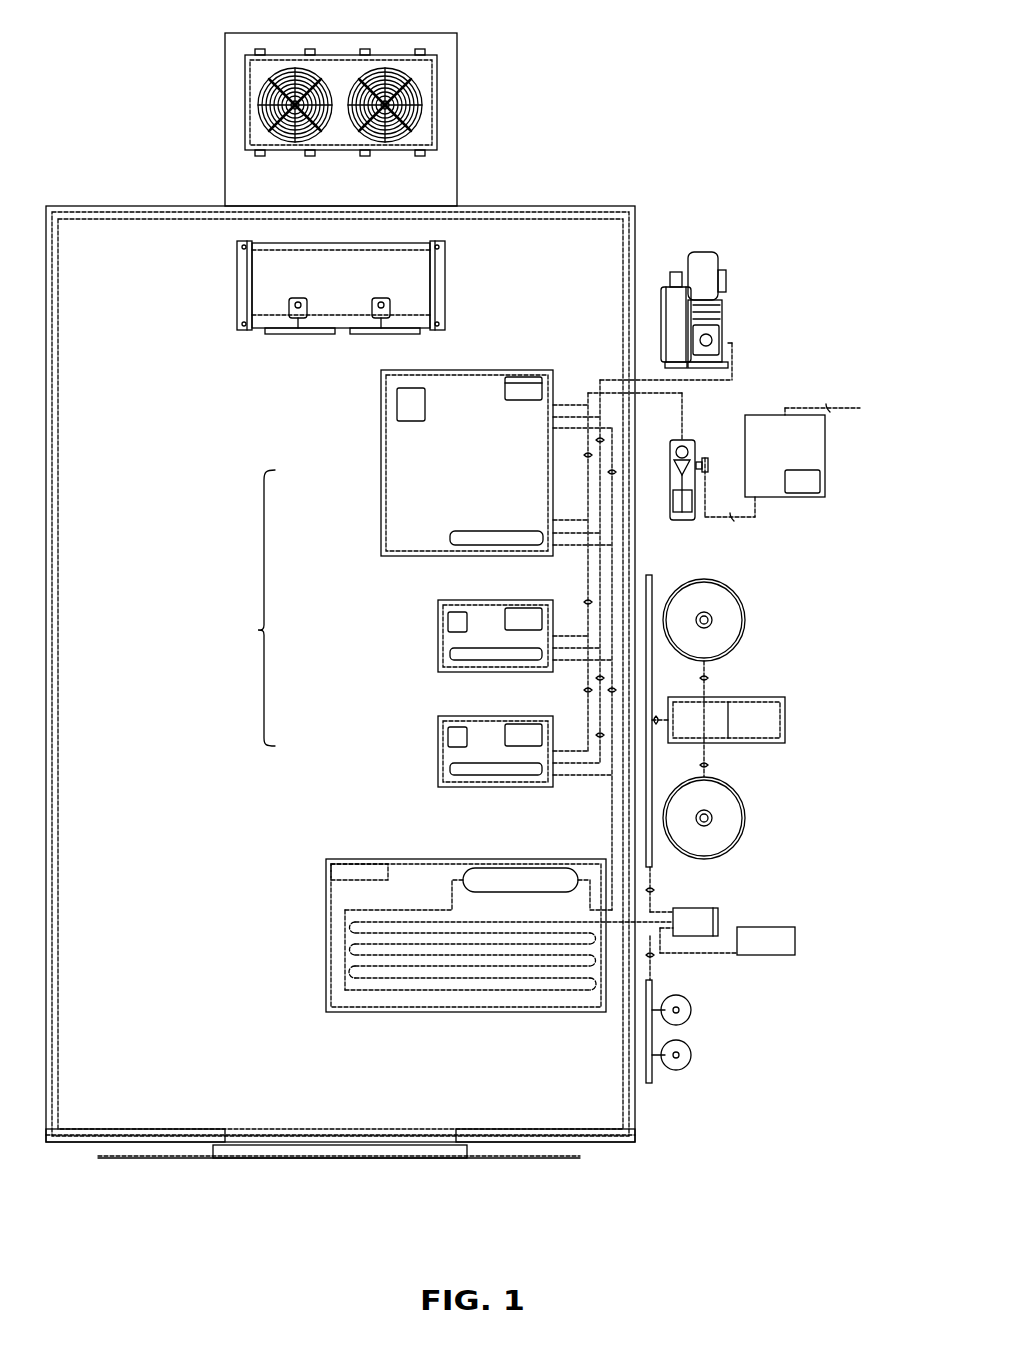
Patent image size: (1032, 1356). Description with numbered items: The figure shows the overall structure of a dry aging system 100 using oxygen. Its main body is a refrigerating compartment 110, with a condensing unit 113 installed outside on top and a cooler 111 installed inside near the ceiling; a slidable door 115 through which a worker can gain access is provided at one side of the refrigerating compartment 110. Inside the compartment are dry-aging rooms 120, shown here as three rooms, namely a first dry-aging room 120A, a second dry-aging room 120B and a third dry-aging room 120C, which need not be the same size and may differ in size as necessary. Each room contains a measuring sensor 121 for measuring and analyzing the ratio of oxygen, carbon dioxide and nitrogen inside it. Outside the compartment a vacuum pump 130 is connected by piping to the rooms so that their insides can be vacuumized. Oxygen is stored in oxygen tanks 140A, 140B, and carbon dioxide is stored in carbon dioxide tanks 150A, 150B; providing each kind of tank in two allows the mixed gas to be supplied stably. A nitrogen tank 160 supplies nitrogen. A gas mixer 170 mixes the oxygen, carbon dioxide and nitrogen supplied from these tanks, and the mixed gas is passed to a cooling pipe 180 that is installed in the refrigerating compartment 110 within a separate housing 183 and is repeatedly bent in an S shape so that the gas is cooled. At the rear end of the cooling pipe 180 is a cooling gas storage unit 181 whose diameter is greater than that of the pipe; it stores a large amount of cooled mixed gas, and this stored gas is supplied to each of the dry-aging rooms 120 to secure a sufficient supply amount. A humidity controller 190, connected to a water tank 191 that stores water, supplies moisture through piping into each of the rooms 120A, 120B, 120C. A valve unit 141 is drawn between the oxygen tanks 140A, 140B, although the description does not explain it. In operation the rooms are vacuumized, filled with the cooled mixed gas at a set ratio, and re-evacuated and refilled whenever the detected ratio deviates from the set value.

The dry aging system 100 is at (801, 28).
The refrigerating compartment 110 is at (590, 206).
The cooler 111 is at (237, 262).
The condensing unit 113 is at (457, 58).
The slidable door 115 is at (242, 1160).
The dry-aging rooms 120 is at (412, 578).
The first dry-aging room 120A is at (381, 482).
The second dry-aging room 120B is at (438, 638).
The third dry-aging room 120C is at (438, 752).
The measuring sensor 121 is at (397, 405).
The vacuum pump 130 is at (700, 252).
The oxygen tank 140A is at (745, 620).
The oxygen tank 140B is at (745, 818).
The valve unit 141 is at (785, 720).
The carbon dioxide tank 150A is at (692, 1010).
The carbon dioxide tank 150B is at (692, 1055).
The nitrogen tank 160 is at (797, 940).
The gas mixer 170 is at (720, 915).
The cooling pipe 180 is at (580, 1012).
The cooling gas storage unit 181 is at (546, 868).
The housing 183 is at (500, 1010).
The humidity controller 190 is at (690, 520).
The water tank 191 is at (825, 483).